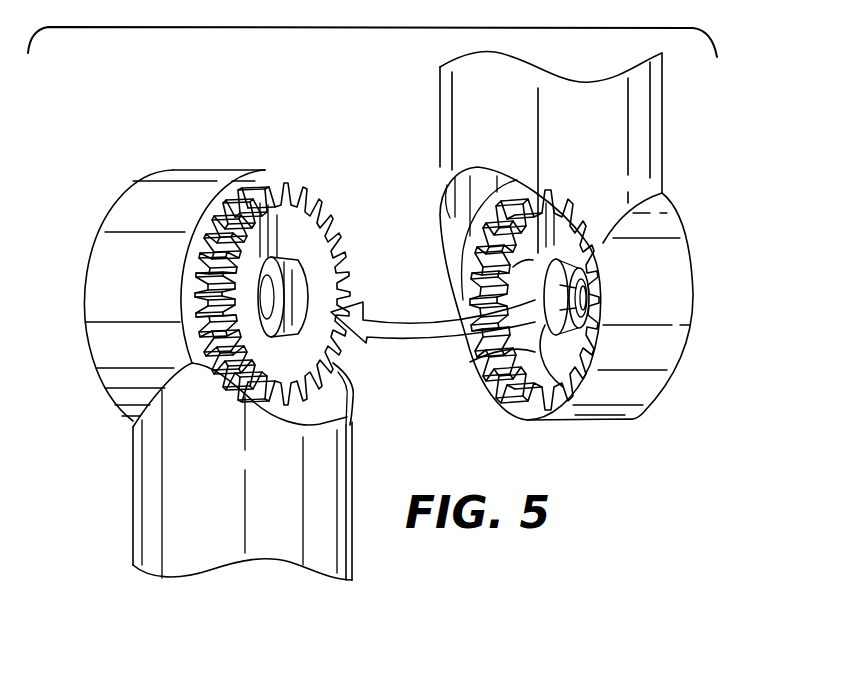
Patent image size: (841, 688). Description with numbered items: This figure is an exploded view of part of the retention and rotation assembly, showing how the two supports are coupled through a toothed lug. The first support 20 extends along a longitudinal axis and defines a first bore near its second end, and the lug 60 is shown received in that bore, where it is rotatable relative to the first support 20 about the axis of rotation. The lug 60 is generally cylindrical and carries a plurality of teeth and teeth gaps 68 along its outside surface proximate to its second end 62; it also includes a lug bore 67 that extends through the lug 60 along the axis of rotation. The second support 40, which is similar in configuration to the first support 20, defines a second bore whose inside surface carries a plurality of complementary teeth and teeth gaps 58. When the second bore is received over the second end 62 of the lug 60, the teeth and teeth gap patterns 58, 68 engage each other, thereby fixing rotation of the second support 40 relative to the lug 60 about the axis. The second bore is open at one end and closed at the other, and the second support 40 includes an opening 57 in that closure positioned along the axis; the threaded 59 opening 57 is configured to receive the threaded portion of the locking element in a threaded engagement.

The first support 20 is at (160, 470).
The second support 40 is at (650, 178).
The opening 57 is at (468, 297).
The teeth and teeth gaps 58 is at (498, 355).
The threaded opening 59 is at (633, 417).
The lug 60 is at (252, 205).
The second end 62 is at (288, 224).
The lug bore 67 is at (297, 288).
The teeth and teeth gaps 68 is at (250, 195).